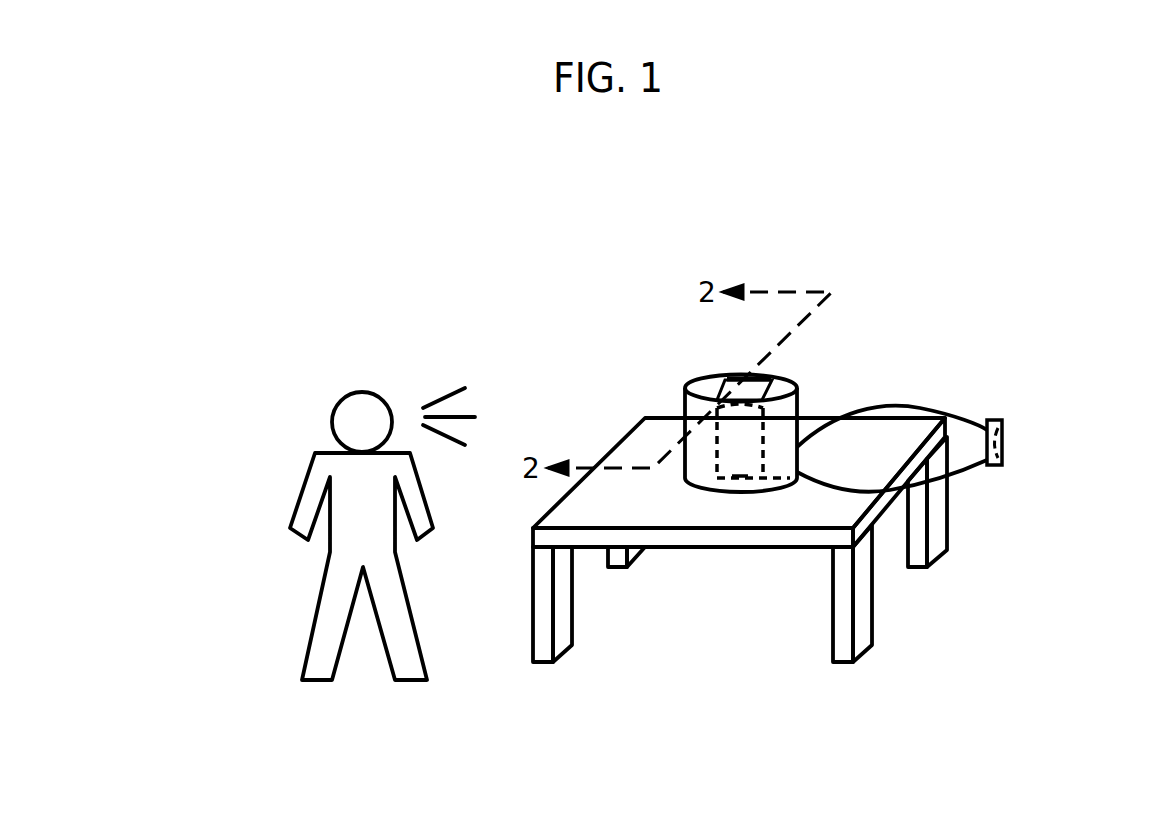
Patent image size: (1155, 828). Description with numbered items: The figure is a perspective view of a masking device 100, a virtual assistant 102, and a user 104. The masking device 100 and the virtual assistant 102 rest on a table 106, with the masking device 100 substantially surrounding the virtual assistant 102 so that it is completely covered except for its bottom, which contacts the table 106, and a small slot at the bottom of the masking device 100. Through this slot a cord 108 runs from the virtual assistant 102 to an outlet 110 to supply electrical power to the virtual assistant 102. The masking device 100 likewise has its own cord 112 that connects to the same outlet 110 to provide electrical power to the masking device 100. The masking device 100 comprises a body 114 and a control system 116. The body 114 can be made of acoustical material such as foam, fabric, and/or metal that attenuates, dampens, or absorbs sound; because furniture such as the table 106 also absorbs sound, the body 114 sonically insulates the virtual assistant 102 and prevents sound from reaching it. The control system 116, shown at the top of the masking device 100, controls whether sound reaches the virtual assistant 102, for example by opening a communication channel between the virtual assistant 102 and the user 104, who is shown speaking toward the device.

The masking device 100 is at (806, 376).
The virtual assistant 102 is at (740, 487).
The user 104 is at (362, 392).
The table 106 is at (795, 550).
The cord 108 is at (967, 477).
The outlet 110 is at (1003, 435).
The cord 112 is at (925, 405).
The body 114 is at (683, 482).
The control system 116 is at (710, 380).